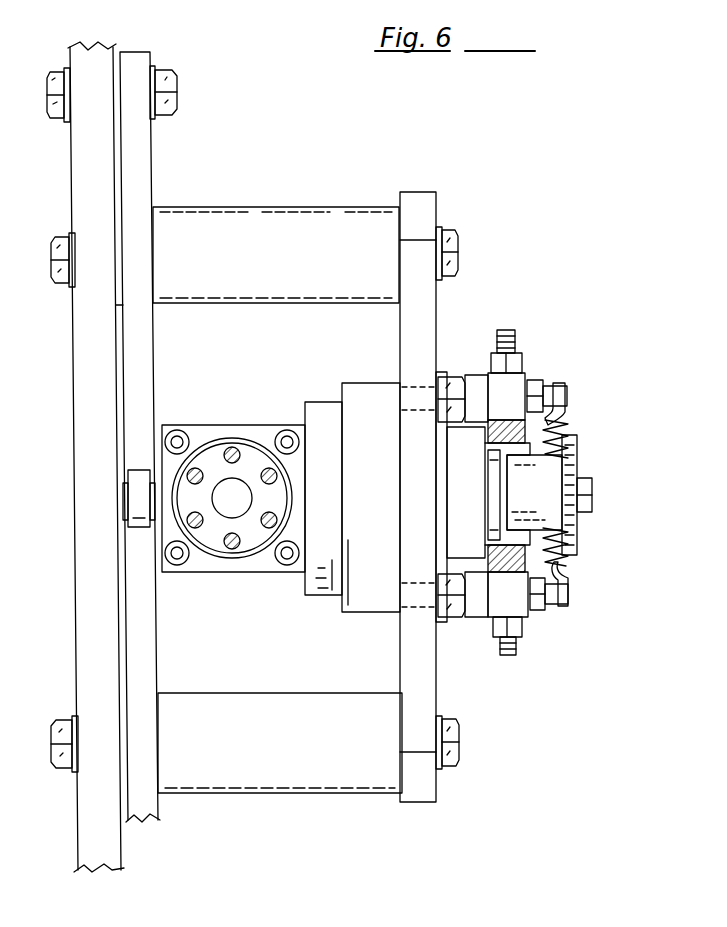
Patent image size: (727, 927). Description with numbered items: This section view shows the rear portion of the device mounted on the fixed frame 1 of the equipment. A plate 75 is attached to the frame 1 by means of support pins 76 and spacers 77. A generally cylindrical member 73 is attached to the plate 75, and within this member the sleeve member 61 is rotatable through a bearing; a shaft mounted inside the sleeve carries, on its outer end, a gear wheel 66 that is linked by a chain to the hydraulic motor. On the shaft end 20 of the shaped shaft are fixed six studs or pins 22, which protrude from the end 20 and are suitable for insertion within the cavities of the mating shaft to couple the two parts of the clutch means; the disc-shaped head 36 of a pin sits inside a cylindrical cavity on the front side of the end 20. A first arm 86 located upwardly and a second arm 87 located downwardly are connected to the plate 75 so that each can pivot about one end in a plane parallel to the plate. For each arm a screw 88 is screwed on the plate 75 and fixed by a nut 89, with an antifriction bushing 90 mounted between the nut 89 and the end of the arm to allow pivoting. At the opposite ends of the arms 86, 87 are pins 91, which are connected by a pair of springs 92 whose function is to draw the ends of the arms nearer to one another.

The fixed frame 1 is at (88, 603).
The end of shaped shaft 20 is at (252, 433).
The studs or pins 22 is at (196, 474).
The disc-shaped head 36 is at (236, 505).
The sleeve member 61 is at (316, 572).
The gear wheel 66 is at (576, 460).
The cylindrical member 73 is at (368, 592).
The plate 75 is at (417, 210).
The support pins 76 is at (455, 237).
The spacers 77 is at (302, 222).
The first arm 86 is at (508, 395).
The second arm 87 is at (520, 605).
The screw 88 is at (408, 385).
The nut 89 is at (449, 382).
The antifriction bushing 90 is at (478, 383).
The pins 91 is at (567, 392).
The springs 92 is at (555, 420).